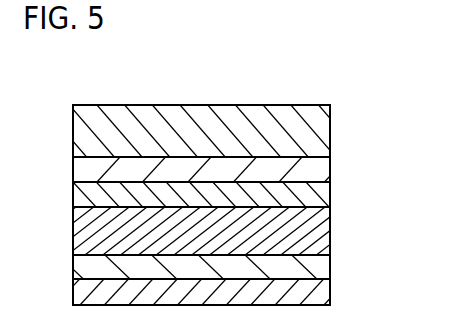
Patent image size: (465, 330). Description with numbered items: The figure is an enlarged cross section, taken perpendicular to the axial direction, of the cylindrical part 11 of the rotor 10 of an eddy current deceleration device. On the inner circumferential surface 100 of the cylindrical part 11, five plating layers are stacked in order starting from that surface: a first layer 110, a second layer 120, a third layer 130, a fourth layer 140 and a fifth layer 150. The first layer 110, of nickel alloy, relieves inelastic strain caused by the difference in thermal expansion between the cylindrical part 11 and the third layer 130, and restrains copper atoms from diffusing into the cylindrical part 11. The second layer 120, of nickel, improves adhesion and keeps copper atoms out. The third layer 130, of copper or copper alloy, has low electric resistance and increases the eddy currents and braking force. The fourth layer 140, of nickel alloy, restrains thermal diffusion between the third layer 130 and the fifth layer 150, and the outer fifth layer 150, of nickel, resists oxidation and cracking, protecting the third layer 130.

The rotor 10 is at (213, 70).
The cylindrical part 11 is at (330, 128).
The inner circumferential surface 100 is at (270, 161).
The first layer 110 is at (330, 166).
The second layer 120 is at (330, 196).
The third layer 130 is at (330, 228).
The fourth layer 140 is at (330, 260).
The fifth layer 150 is at (330, 292).